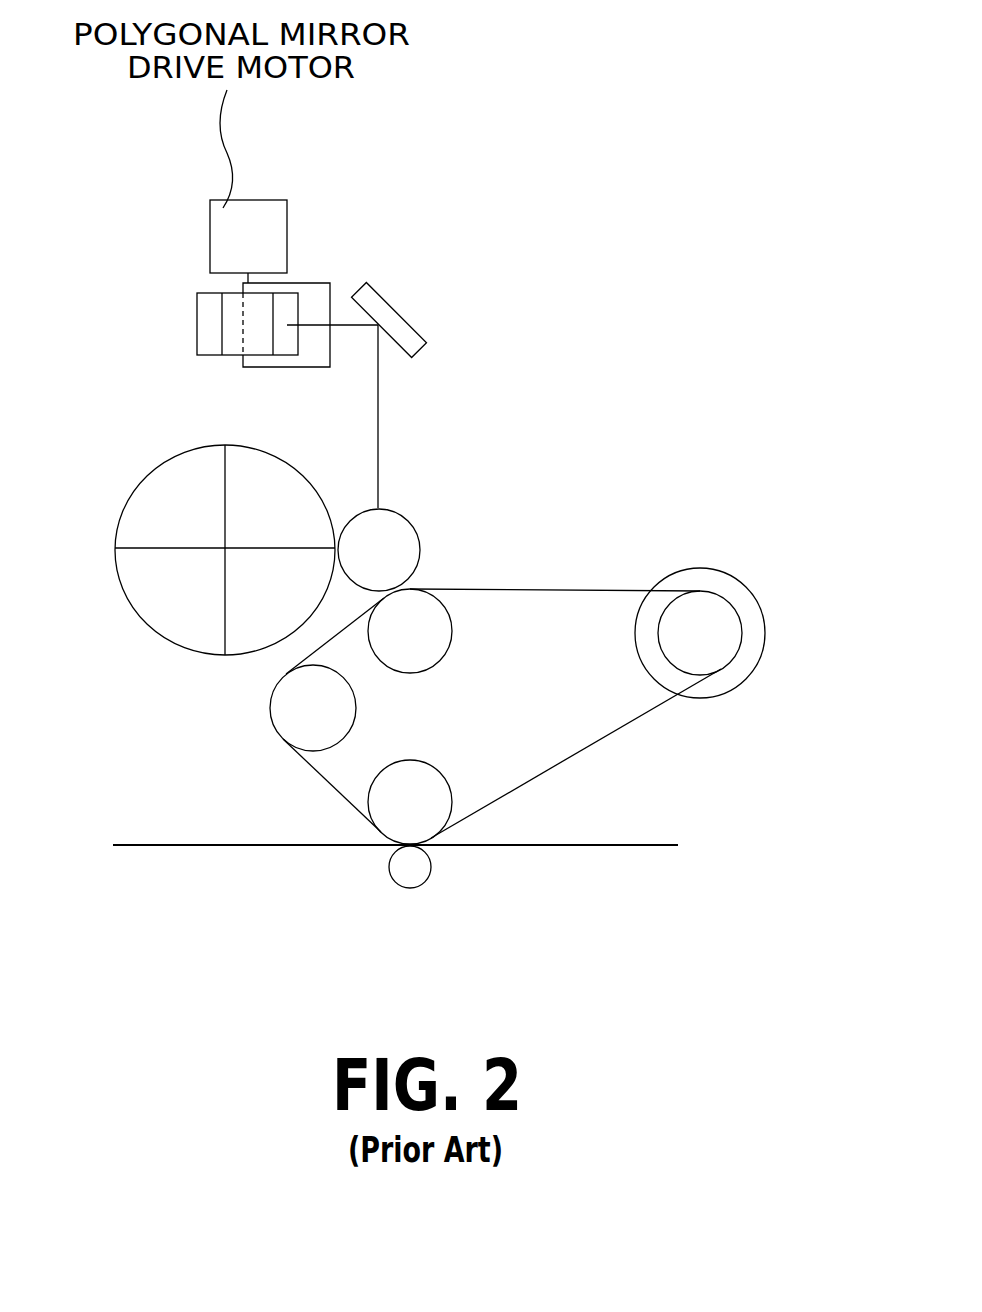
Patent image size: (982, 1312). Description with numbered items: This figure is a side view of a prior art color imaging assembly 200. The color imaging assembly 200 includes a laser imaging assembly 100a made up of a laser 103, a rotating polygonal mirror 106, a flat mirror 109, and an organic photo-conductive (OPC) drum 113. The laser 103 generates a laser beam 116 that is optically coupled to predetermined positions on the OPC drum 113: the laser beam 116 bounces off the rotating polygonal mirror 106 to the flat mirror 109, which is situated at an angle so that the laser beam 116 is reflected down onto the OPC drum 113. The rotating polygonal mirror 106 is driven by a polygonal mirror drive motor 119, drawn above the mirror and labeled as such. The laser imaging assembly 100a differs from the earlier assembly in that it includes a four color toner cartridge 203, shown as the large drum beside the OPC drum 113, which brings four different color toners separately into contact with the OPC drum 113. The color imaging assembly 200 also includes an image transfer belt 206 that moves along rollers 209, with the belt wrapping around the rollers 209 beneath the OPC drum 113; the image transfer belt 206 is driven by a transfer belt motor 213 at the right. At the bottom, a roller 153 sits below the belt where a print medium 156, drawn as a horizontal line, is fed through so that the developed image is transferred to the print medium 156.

The polygonal mirror drive motor 119 is at (247, 197).
The laser 103 is at (308, 282).
The rotating polygonal mirror 106 is at (193, 325).
The flat mirror 109 is at (400, 310).
The laser beam 116 is at (380, 443).
The color imaging assembly 200 is at (635, 262).
The laser imaging assembly 100a is at (538, 395).
The four color toner cartridge 203 is at (138, 478).
The OPC drum 113 is at (425, 542).
The rollers 209 is at (660, 658).
The transfer belt motor 213 is at (703, 567).
The image transfer belt 206 is at (602, 745).
The print medium 156 is at (580, 848).
The roller 153 is at (410, 890).